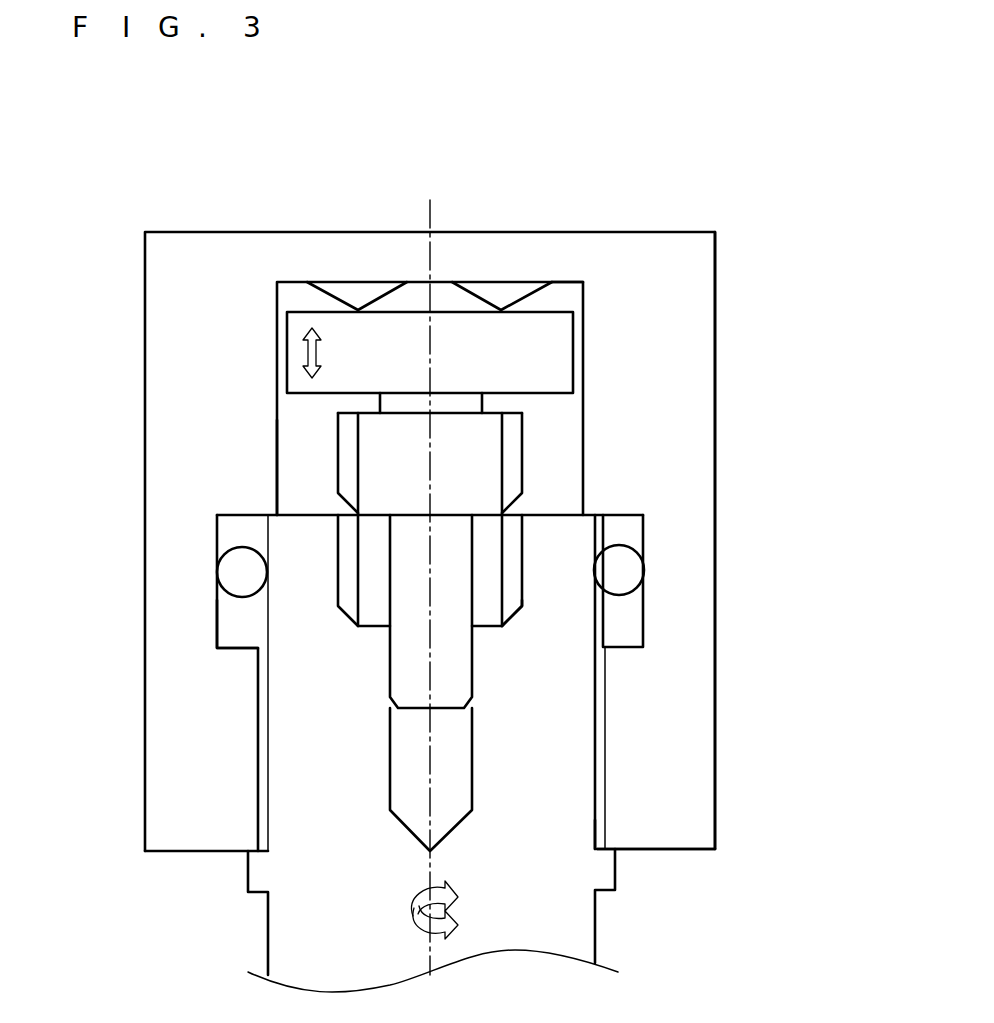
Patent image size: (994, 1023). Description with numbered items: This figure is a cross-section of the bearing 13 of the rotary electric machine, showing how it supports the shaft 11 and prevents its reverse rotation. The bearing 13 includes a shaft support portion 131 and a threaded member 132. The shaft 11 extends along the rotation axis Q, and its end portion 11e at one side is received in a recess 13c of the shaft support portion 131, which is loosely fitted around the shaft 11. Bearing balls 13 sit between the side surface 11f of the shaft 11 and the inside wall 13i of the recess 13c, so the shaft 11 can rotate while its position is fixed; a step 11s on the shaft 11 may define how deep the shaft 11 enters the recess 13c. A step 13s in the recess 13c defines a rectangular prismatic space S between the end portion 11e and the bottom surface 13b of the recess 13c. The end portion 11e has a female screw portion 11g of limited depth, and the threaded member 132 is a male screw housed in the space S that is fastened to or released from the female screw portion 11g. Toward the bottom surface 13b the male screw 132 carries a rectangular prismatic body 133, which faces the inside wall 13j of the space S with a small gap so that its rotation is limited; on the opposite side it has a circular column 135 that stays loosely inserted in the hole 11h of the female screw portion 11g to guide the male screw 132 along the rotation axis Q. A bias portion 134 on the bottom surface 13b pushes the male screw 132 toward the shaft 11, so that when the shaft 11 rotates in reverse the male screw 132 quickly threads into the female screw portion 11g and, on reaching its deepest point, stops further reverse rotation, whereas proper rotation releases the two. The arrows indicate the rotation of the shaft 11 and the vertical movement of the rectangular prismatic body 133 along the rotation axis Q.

The shaft 11 is at (597, 917).
The end portion 11e is at (567, 513).
The side surface 11f is at (593, 620).
The female screw portion 11g is at (512, 600).
The hole 11h is at (395, 766).
The step 11s is at (607, 847).
The bearing 13 is at (118, 234).
The bottom surface 13b is at (569, 286).
The recess 13c is at (604, 841).
The inside wall 13i is at (226, 640).
The inside wall 13j is at (291, 456).
The step 13s is at (590, 528).
The shaft support portion 131 is at (703, 763).
The threaded member 132 is at (525, 450).
The rectangular prismatic body 133 is at (553, 356).
The bias portion 134 is at (533, 296).
The circular column 135 is at (452, 672).
The space S is at (292, 495).
The rotation axis Q is at (430, 209).